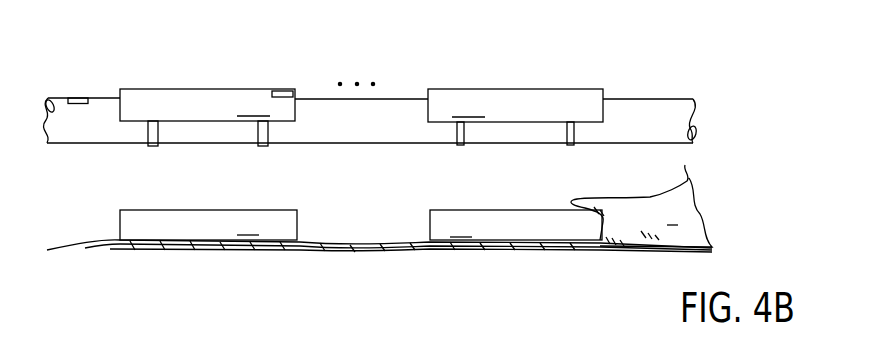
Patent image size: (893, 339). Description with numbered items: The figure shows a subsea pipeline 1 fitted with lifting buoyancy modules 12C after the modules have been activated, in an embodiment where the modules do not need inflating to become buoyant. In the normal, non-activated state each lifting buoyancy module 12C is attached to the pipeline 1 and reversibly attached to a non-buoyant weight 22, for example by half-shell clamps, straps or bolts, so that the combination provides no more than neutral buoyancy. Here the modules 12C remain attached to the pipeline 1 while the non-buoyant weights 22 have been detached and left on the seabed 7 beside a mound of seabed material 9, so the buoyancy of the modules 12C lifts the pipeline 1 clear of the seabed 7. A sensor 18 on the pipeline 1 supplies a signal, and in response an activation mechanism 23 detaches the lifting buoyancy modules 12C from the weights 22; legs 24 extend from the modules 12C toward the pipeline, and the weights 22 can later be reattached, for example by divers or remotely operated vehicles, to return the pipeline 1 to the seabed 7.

The subsea pipeline 1 is at (105, 136).
The seabed 7 is at (545, 255).
The sediment pile 9 is at (641, 206).
The lifting buoyancy module 12C is at (361, 105).
The sensor 18 is at (80, 97).
The non-buoyant weight 22 is at (361, 225).
The activation mechanism 23 is at (283, 91).
The leg 24 is at (266, 127).